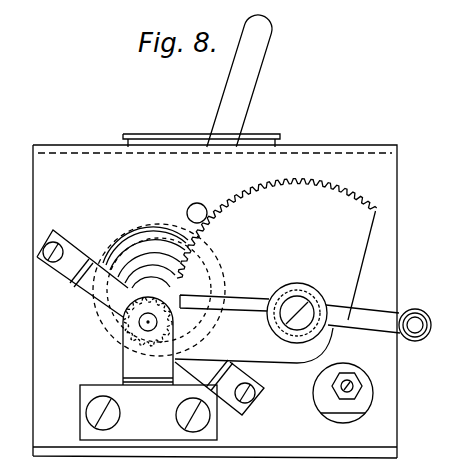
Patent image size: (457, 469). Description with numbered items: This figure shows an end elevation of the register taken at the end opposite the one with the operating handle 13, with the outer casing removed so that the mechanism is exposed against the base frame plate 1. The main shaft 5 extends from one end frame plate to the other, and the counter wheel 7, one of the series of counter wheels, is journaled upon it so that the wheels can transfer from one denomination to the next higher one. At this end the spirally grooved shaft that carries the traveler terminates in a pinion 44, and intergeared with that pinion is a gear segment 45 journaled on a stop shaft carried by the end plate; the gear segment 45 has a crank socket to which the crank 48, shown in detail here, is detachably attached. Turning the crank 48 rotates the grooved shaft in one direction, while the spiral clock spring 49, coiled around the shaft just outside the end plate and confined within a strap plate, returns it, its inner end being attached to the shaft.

The base frame plate 1 is at (290, 445).
The counter wheel 7 is at (215, 166).
The operating handle 13 is at (268, 32).
The gear segment 45 is at (254, 187).
The main shaft 5 is at (188, 212).
The spiral clock spring 49 is at (127, 233).
The pinion 44 is at (112, 333).
The crank 48 is at (362, 318).